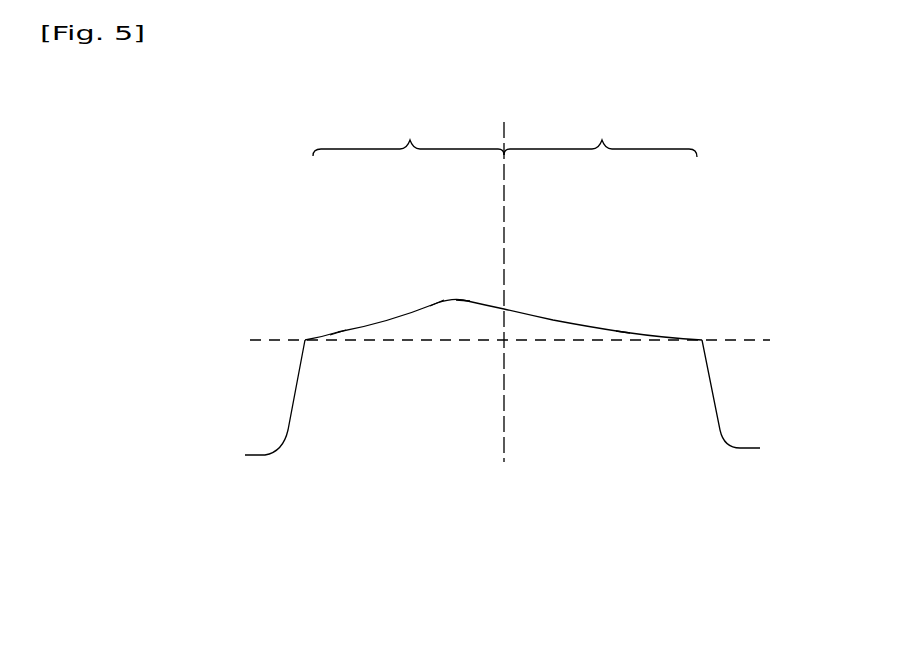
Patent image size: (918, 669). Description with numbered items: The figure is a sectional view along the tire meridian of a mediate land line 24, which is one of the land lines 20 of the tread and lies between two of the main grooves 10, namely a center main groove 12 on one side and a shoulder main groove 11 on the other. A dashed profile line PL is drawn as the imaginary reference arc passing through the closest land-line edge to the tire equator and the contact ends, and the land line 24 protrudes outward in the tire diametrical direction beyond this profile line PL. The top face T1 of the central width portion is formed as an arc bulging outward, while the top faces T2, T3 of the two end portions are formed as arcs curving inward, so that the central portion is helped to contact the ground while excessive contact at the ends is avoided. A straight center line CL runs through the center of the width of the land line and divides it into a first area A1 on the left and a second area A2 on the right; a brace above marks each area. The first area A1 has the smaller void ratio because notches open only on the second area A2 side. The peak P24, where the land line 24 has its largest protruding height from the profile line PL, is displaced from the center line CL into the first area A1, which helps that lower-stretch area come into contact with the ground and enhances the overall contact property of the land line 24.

The center line CL is at (504, 277).
The profile line PL is at (275, 336).
The first area A1 is at (408, 133).
The second area A2 is at (600, 133).
The land line 20 is at (503, 275).
The mediate land line 24 is at (553, 320).
The top face of central portion T1 is at (437, 302).
The top face of end portion T2 is at (338, 333).
The top face of end portion T3 is at (623, 332).
The peak P24 is at (467, 300).
The main groove 10 is at (508, 442).
The shoulder main groove 11 is at (262, 443).
The center main groove 12 is at (744, 436).